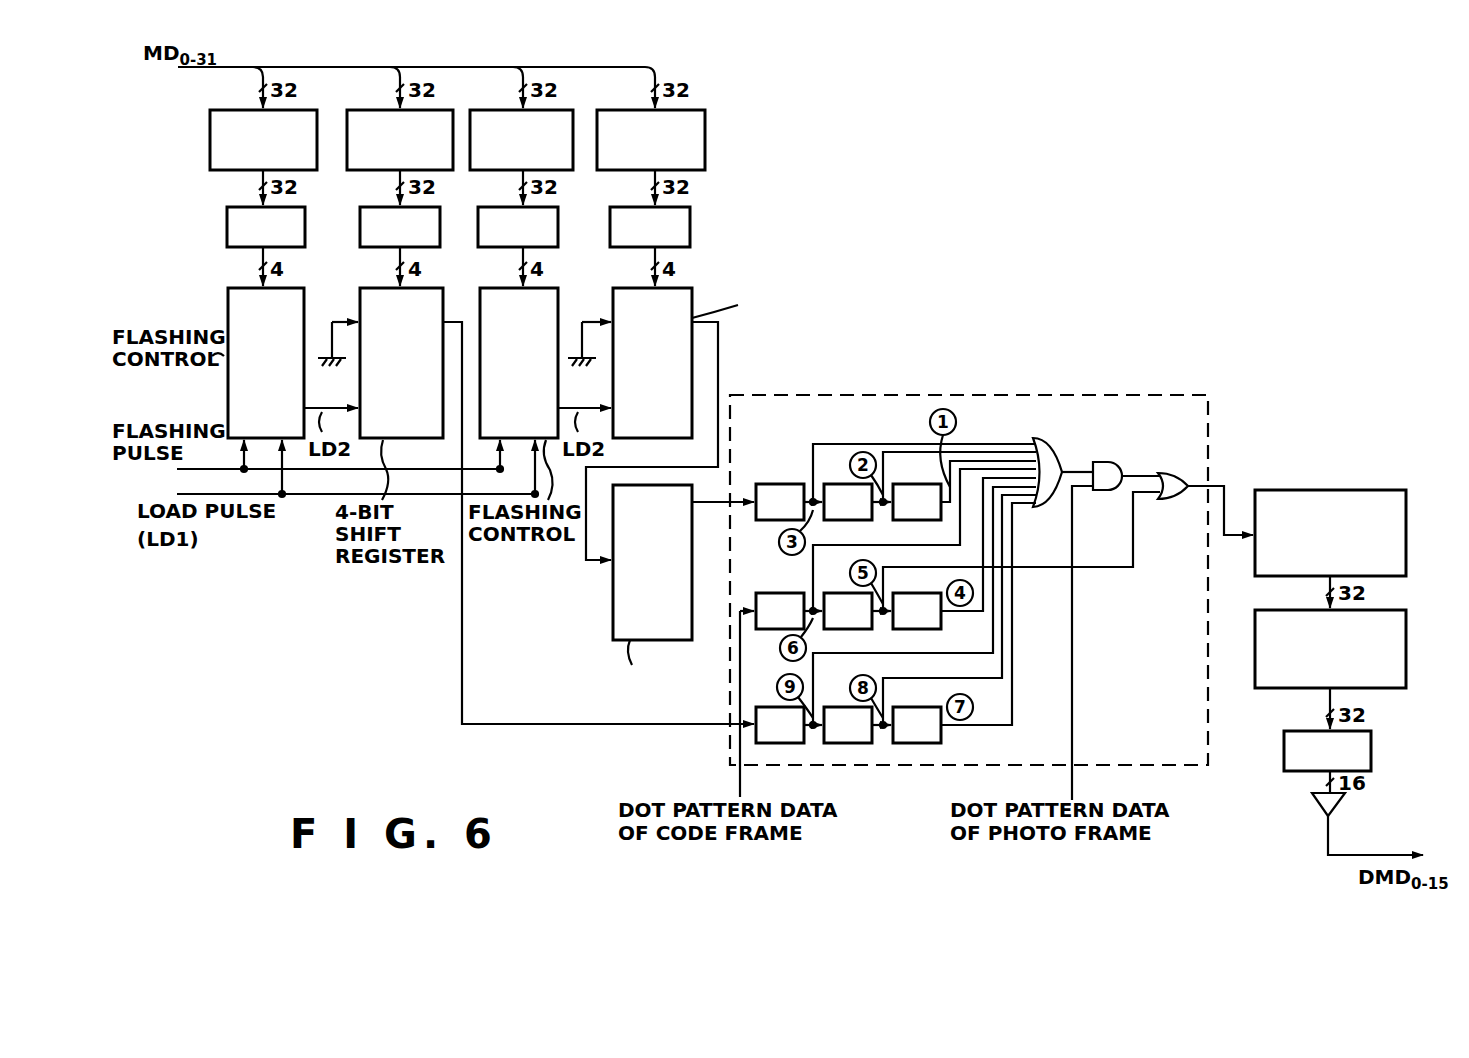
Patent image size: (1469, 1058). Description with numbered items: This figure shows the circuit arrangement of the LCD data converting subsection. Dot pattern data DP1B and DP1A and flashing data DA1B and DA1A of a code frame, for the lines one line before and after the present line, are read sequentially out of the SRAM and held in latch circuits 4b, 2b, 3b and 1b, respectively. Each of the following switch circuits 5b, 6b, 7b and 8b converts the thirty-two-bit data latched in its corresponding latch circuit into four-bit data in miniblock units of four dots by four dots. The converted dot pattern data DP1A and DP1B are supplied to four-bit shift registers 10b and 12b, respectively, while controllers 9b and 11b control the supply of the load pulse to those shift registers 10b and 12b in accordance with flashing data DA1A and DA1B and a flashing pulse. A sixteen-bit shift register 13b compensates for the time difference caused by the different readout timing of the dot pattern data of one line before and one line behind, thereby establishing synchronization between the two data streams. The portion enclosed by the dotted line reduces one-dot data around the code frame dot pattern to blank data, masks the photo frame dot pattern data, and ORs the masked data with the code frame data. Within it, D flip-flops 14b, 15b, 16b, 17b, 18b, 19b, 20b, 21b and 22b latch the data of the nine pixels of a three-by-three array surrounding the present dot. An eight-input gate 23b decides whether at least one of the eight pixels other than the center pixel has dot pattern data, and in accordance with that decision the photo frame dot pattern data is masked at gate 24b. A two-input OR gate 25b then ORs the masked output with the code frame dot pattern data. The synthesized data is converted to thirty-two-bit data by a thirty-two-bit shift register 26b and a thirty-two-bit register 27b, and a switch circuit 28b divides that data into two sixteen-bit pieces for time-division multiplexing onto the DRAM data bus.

The latch circuit 1b is at (317, 112).
The latch circuit 2b is at (453, 112).
The latch circuit 3b is at (573, 112).
The latch circuit 4b is at (705, 118).
The switch circuit 5b is at (305, 215).
The switch circuit 6b is at (440, 215).
The switch circuit 7b is at (558, 215).
The switch circuit 8b is at (690, 215).
The controller 9b is at (304, 298).
The 4-bit shift register 10b is at (443, 298).
The controller 11b is at (558, 298).
The 4-bit shift register 12b is at (692, 298).
The 16-bit shift register 13b is at (613, 612).
The D flip-flop 14b is at (776, 484).
The D flip-flop 15b is at (842, 520).
The D flip-flop 16b is at (910, 520).
The D flip-flop 17b is at (772, 593).
The D flip-flop 18b is at (843, 629).
The D flip-flop 19b is at (930, 629).
The D flip-flop 20b is at (768, 707).
The D flip-flop 21b is at (838, 707).
The D flip-flop 22b is at (935, 743).
The 8-input NOR 23b is at (1048, 462).
The AND gate 24b is at (1100, 492).
The 2-input OR gate 25b is at (1168, 500).
The 32-bit shift register 26b is at (1366, 488).
The 32-bit register 27b is at (1406, 628).
The switch circuit 28b is at (1371, 752).